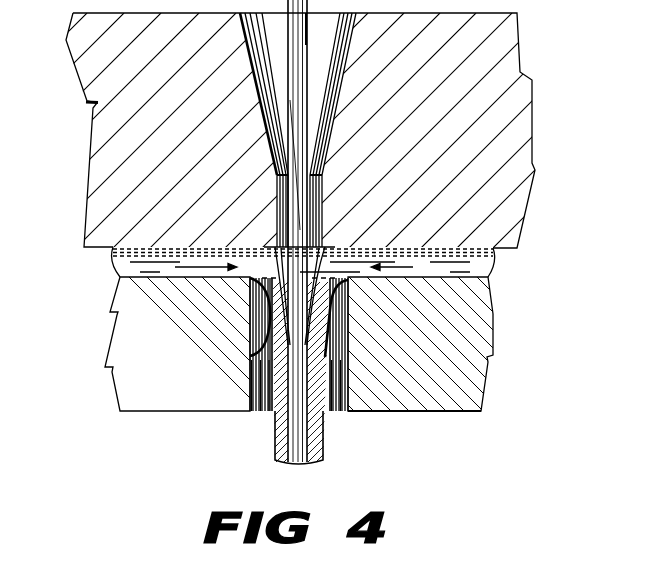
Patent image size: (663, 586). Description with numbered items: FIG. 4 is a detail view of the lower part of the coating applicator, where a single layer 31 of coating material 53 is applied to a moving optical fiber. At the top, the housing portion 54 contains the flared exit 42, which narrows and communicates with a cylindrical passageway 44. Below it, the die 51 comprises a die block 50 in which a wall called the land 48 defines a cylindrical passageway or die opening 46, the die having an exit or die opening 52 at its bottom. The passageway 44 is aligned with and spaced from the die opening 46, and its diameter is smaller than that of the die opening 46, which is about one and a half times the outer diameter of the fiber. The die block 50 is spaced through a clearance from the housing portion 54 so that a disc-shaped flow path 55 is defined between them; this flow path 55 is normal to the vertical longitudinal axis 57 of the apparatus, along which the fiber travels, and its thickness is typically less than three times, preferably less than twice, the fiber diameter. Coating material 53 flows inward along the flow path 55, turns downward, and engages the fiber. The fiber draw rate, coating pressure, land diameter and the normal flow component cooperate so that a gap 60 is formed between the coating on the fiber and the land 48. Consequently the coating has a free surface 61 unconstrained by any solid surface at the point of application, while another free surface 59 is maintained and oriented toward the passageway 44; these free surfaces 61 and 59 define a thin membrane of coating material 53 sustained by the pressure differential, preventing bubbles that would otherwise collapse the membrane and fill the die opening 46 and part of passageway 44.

The layer 31 is at (281, 437).
The flared exit 42 is at (333, 89).
The cylindrical passageway 44 is at (314, 218).
The die opening 46 is at (340, 341).
The land 48 is at (343, 372).
The die block 50 is at (479, 388).
The die 51 is at (427, 413).
The exit or die opening 52 is at (333, 416).
The coating material 53 is at (171, 270).
The portion of the housing 54 is at (520, 150).
The flow path 55 is at (100, 250).
The vertical longitudinal axis 57 is at (300, 134).
The free surface 59 is at (256, 251).
The gap 60 is at (256, 355).
The free surface 61 is at (258, 379).